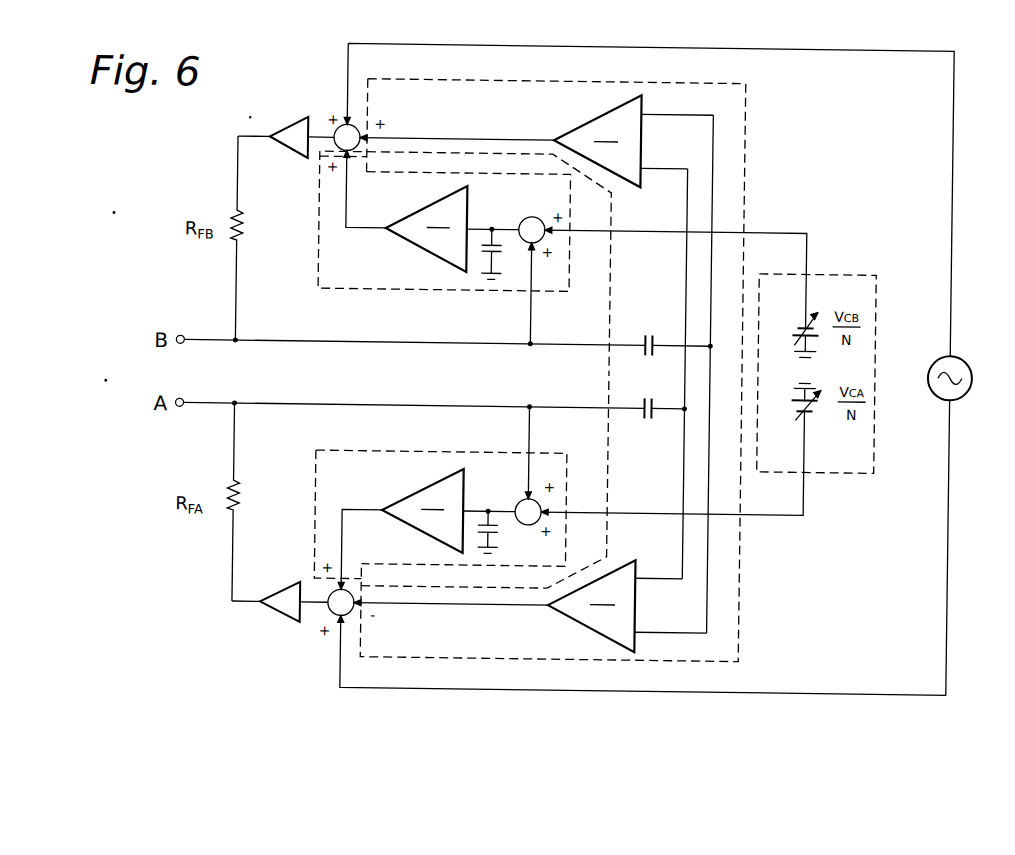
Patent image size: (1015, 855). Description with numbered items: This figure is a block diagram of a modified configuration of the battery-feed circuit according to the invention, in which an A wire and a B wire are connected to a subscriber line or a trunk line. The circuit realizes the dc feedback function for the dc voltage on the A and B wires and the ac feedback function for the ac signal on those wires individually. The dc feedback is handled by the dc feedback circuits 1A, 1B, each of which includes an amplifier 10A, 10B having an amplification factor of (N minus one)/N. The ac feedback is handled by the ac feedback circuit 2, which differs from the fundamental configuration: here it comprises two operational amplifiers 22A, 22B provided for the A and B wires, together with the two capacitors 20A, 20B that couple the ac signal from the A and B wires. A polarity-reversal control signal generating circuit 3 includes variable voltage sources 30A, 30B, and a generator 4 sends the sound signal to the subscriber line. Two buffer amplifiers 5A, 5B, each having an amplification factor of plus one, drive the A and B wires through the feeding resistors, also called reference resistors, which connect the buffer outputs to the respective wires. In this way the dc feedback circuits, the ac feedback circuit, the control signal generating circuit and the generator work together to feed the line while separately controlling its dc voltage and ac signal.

The dc feedback circuit 1A is at (317, 461).
The dc feedback circuit 1B is at (316, 253).
The ac feedback circuit 2 is at (791, 92).
The polarity-reversal control signal generating circuit 3 is at (841, 268).
The generator 4 is at (929, 367).
The buffer amplifier 5A is at (292, 593).
The buffer amplifier 5B is at (290, 121).
The amplifier 10A is at (411, 498).
The amplifier 10B is at (420, 210).
The capacitor 20A is at (649, 419).
The capacitor 20B is at (649, 331).
The operational amplifier 22A is at (593, 630).
The operational amplifier 22B is at (576, 121).
The variable voltage source 30A is at (803, 402).
The variable voltage source 30B is at (802, 322).